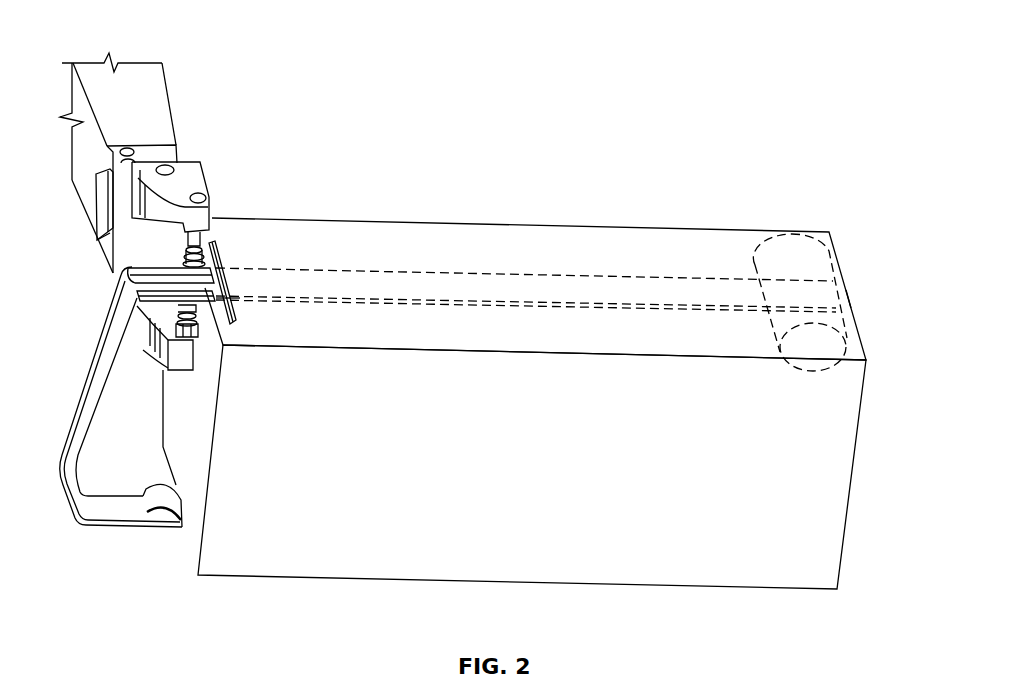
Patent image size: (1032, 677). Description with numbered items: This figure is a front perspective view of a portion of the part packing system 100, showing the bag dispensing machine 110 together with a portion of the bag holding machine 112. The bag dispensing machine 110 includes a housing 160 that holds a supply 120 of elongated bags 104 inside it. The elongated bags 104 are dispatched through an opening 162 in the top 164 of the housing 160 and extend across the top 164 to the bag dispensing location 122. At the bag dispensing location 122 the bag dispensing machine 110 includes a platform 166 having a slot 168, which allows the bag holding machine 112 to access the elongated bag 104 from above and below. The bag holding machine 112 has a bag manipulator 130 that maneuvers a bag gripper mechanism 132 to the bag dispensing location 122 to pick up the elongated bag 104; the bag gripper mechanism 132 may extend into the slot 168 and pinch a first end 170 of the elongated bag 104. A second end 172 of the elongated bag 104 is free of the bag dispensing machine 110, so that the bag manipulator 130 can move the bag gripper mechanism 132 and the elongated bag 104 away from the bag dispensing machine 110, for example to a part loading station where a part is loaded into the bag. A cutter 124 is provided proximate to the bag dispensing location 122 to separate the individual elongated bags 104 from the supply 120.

The part packing system 100 is at (552, 76).
The elongated bag 104 is at (70, 428).
The bag dispensing machine 110 is at (612, 596).
The bag holding machine 112 is at (204, 90).
The supply 120 is at (848, 317).
The bag dispensing location 122 is at (846, 296).
The cutter 124 is at (222, 258).
The bag manipulator 130 is at (118, 93).
The bag gripper mechanism 132 is at (140, 330).
The housing 160 is at (825, 485).
The opening 162 is at (838, 279).
The top 164 is at (712, 250).
The platform 166 is at (150, 301).
The slot 168 is at (145, 282).
The first end 170 is at (207, 293).
The second end 172 is at (157, 508).